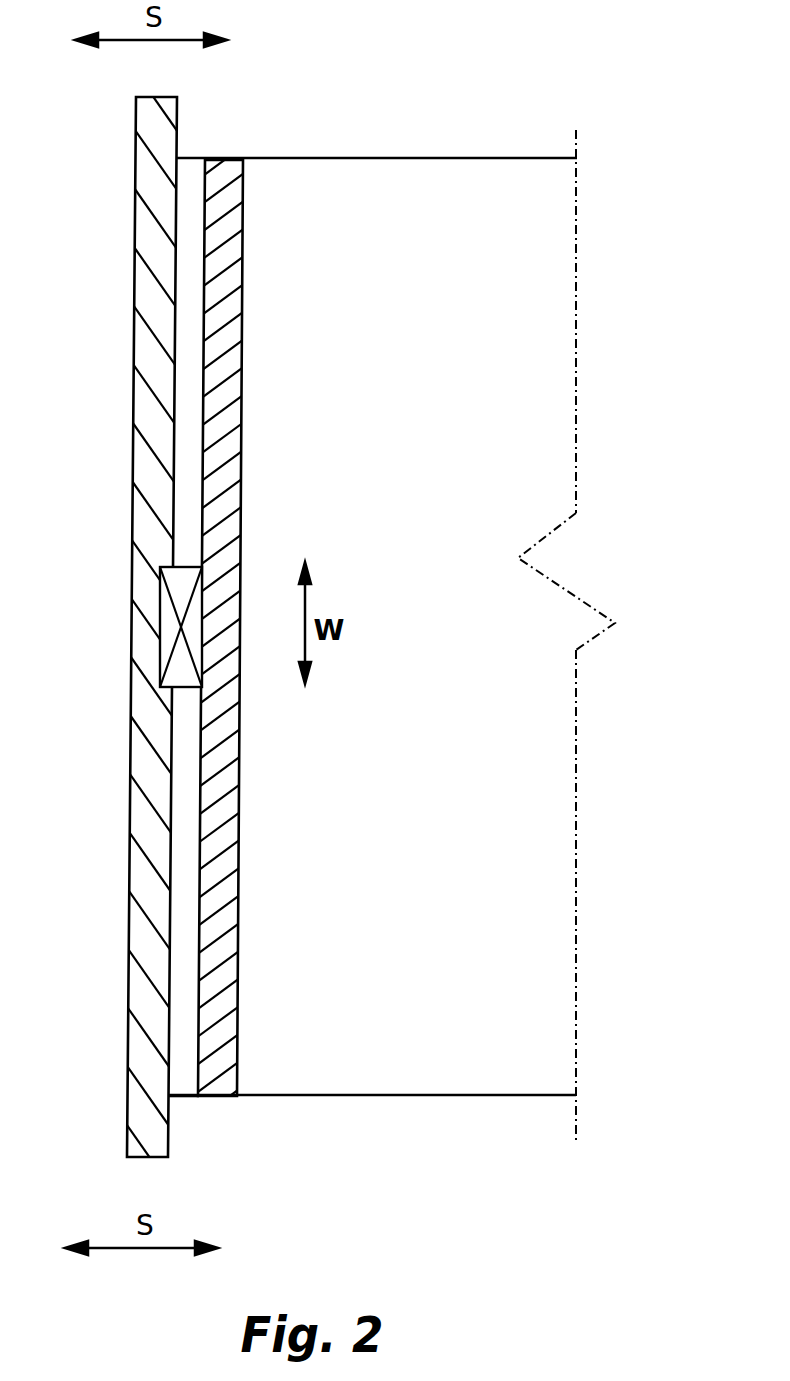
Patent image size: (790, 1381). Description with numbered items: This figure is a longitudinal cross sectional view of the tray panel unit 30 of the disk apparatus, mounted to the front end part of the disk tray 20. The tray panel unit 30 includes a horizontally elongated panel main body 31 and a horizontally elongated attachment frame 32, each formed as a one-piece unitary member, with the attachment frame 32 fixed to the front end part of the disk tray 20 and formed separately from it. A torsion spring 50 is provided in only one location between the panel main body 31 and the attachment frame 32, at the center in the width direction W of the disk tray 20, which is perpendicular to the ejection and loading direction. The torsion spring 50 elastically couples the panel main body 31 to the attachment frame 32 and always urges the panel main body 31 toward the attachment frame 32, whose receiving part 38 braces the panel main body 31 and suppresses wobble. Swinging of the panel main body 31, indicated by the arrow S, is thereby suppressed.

The disk tray 20 is at (422, 1097).
The tray panel unit 30 is at (178, 631).
The panel main body 31 is at (128, 818).
The attachment frame 32 is at (240, 798).
The receiving part 38 is at (185, 1098).
The torsion spring 50 is at (160, 630).